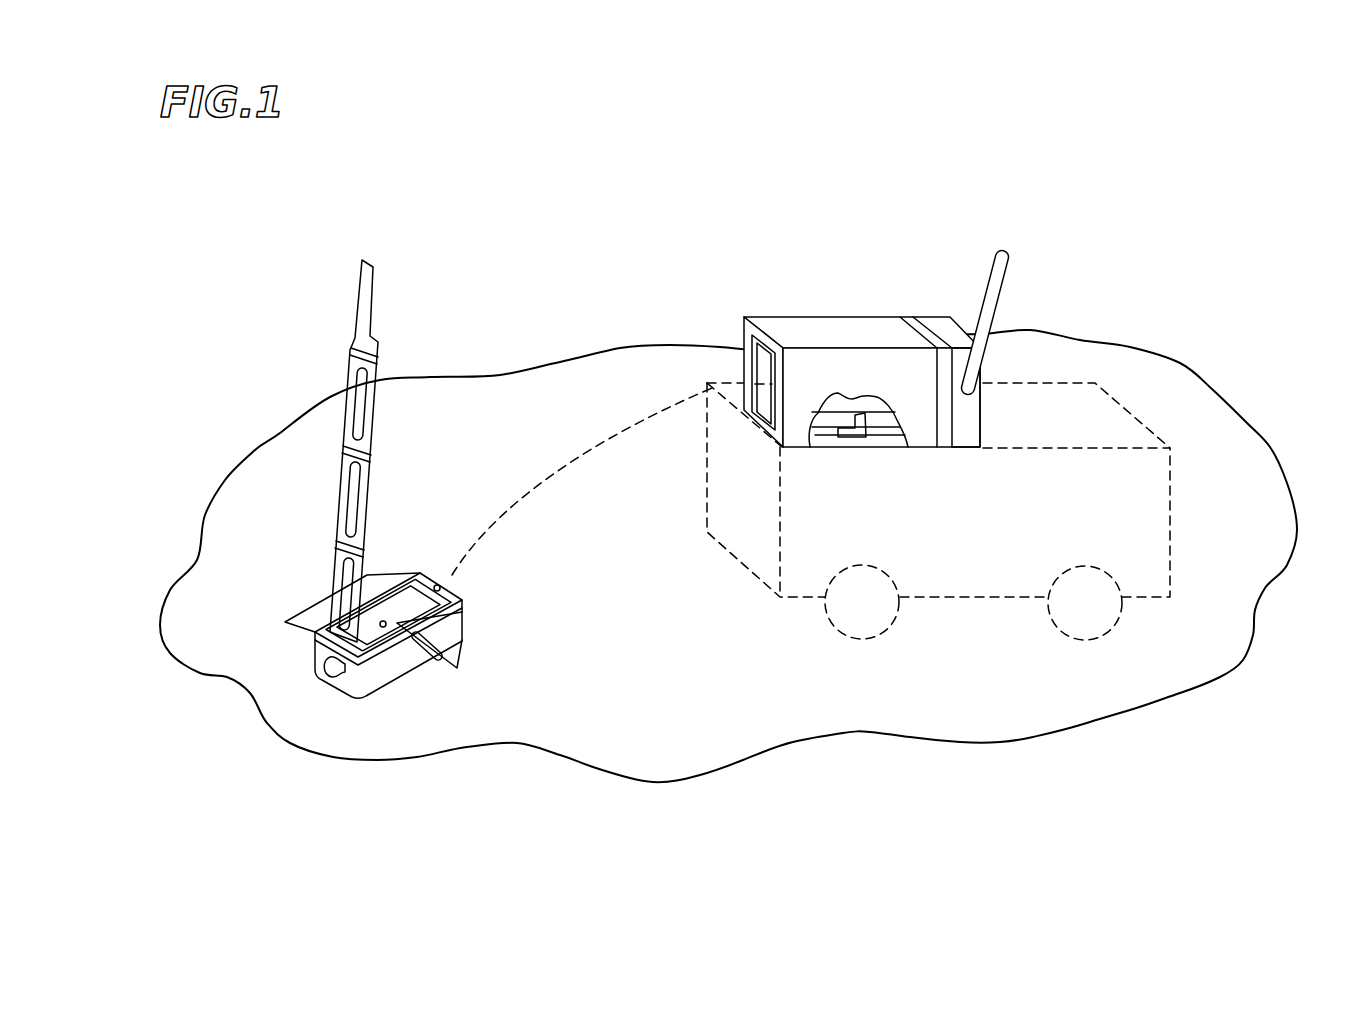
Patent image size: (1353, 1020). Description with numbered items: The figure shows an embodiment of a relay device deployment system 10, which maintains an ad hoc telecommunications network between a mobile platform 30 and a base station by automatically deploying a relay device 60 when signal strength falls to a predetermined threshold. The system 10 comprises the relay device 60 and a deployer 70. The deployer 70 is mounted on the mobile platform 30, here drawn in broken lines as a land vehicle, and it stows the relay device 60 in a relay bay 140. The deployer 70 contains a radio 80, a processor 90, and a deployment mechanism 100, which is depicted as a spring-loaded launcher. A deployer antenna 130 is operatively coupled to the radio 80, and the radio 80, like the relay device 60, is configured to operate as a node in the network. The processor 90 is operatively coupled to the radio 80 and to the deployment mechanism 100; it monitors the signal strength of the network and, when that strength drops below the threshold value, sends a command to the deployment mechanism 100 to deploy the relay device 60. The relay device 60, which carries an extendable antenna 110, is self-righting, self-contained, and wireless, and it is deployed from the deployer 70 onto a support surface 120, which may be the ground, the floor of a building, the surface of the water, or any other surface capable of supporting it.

The relay device deployment system 10 is at (258, 358).
The mobile platform 30 is at (1100, 410).
The relay device 60 is at (310, 653).
The deployer 70 is at (825, 328).
The radio 80 is at (945, 325).
The processor 90 is at (910, 323).
The deployment mechanism 100 is at (862, 443).
The extendable antenna 110 is at (373, 268).
The support surface 120 is at (633, 718).
The deployer antenna 130 is at (1002, 283).
The relay bay 140 is at (760, 353).